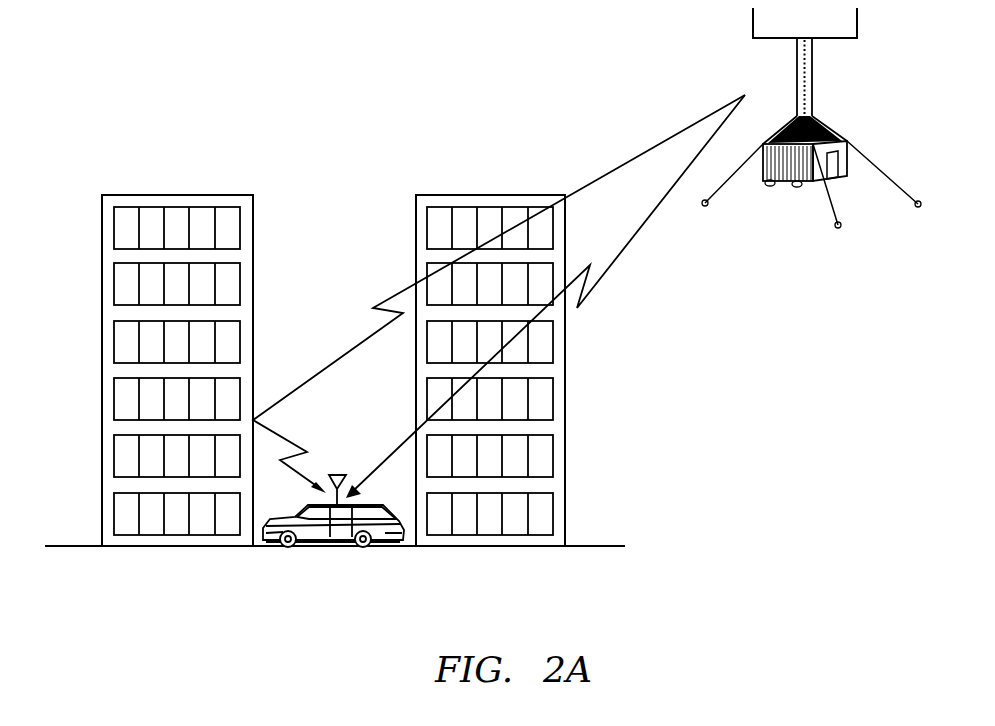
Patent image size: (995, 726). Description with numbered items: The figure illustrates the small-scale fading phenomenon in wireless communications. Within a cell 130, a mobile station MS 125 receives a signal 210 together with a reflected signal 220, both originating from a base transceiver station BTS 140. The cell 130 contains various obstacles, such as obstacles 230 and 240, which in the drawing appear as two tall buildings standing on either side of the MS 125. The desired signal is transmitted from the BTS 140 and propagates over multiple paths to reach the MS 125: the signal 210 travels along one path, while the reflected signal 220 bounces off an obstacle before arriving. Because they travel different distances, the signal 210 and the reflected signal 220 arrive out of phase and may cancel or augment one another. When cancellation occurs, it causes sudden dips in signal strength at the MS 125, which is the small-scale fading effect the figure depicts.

The cell 130 is at (244, 132).
The obstacle 240 is at (255, 296).
The obstacle 230 is at (416, 232).
The BTS 140 is at (812, 86).
The reflected signal 220 is at (692, 125).
The signal 210 is at (605, 272).
The MS 125 is at (312, 544).